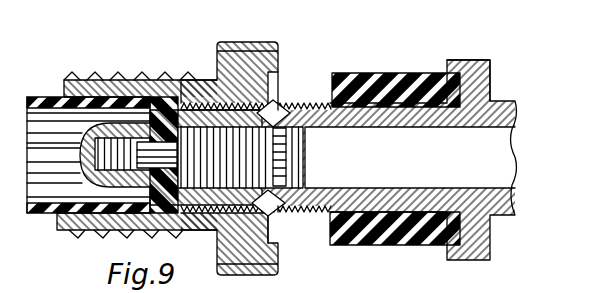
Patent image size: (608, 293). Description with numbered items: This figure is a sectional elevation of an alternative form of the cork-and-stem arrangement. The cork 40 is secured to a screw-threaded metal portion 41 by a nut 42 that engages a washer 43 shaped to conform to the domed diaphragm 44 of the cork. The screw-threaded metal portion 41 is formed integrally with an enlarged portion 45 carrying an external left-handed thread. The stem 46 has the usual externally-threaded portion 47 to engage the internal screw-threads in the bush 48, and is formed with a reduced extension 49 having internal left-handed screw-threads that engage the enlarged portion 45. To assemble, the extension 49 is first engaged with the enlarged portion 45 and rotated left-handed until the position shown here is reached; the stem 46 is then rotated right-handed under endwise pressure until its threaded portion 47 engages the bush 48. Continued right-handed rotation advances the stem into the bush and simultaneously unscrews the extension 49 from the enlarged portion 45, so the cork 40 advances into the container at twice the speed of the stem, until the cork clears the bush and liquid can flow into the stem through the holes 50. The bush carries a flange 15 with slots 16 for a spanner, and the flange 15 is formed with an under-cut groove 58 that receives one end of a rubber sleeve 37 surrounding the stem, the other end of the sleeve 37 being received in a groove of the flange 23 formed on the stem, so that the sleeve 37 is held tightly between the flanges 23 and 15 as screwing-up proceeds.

The flange 15 is at (274, 52).
The slots 16 is at (247, 42).
The flange 23 is at (453, 60).
The rubber sleeve 37 is at (388, 73).
The cork 40 is at (47, 215).
The screw-threaded metal portion 41 is at (122, 130).
The nut 42 is at (62, 97).
The washer 43 is at (140, 108).
The domed diaphragm 44 is at (174, 97).
The enlarged portion 45 is at (292, 103).
The stem 46 is at (382, 121).
The externally-threaded portion 47 is at (292, 213).
The bush 48 is at (155, 80).
The reduced extension 49 is at (262, 113).
The holes 50 is at (287, 156).
The under-cut groove 58 is at (252, 116).